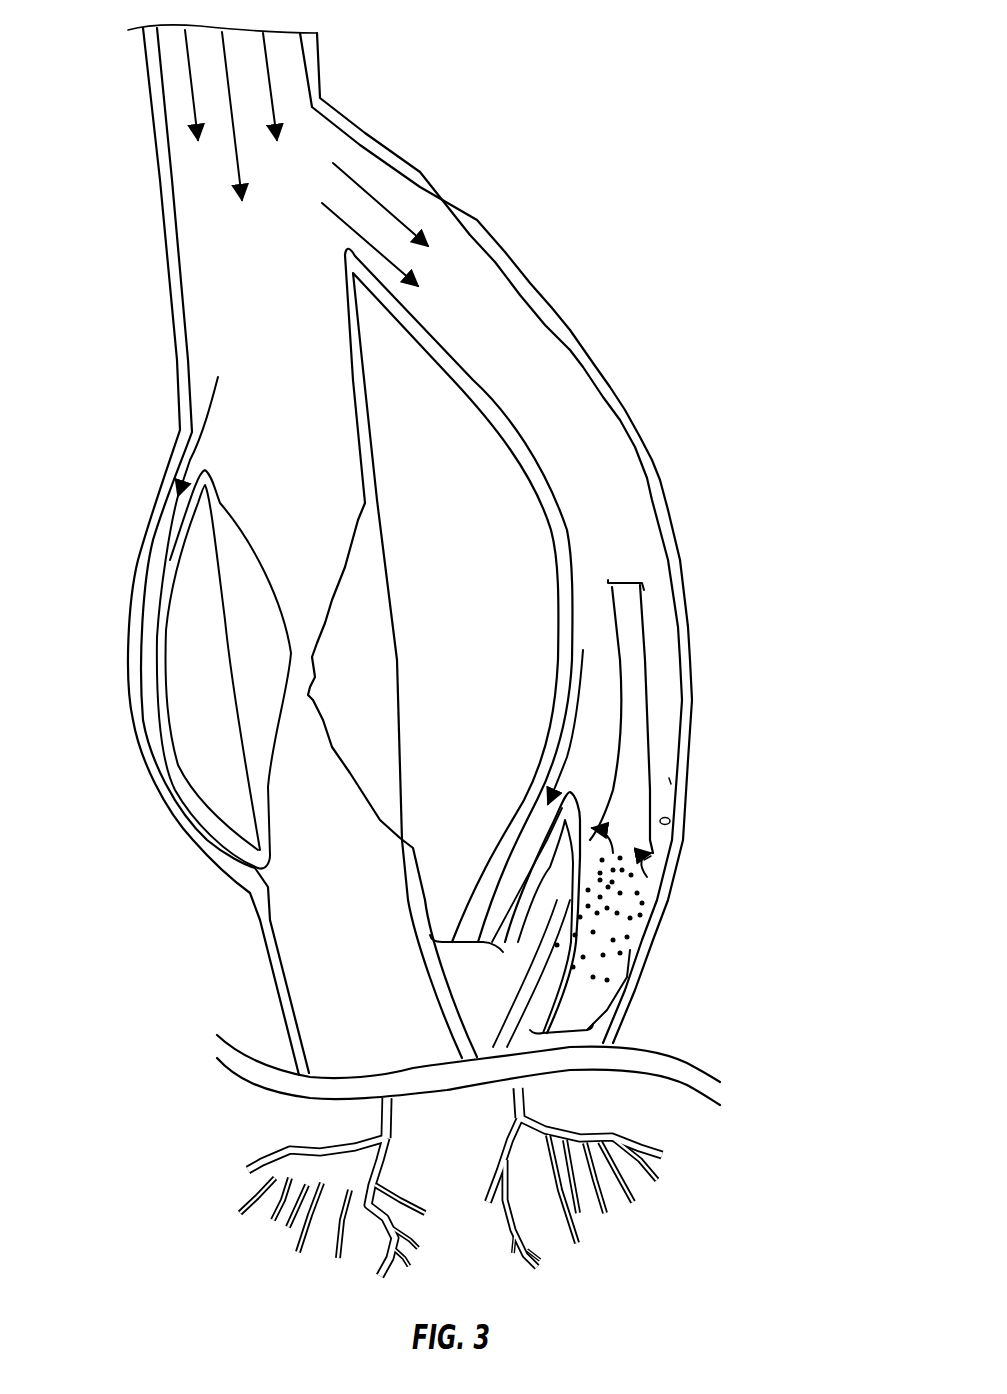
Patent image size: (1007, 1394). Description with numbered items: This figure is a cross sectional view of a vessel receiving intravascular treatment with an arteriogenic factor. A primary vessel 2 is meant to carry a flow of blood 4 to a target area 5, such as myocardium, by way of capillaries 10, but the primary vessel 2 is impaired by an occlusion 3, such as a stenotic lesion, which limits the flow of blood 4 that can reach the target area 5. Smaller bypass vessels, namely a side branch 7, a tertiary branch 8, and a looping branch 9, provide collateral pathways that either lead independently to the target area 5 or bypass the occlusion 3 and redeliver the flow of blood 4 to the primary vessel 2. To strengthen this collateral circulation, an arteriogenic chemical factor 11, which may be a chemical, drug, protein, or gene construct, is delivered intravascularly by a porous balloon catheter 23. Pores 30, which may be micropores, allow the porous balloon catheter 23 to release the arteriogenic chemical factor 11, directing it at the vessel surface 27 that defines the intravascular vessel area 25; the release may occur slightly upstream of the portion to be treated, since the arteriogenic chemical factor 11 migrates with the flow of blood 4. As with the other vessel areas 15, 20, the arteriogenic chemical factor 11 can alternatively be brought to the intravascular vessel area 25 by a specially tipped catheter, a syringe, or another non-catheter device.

The primary vessel 2 is at (214, 358).
The occlusion 3 is at (224, 623).
The flow of blood 4 is at (384, 417).
The target area 5 is at (466, 1143).
The side branch 7 is at (524, 538).
The tertiary branch 8 is at (440, 653).
The looping branch 9 is at (189, 752).
The capillaries 10 is at (457, 1181).
The arteriogenic chemical factor 11 is at (560, 939).
The vessel area 15 is at (534, 937).
The vessel area 20 is at (510, 915).
The porous balloon catheter 23 is at (672, 755).
The intravascular vessel area 25 is at (546, 992).
The vessel surface 27 is at (707, 805).
The pores 30 is at (636, 920).